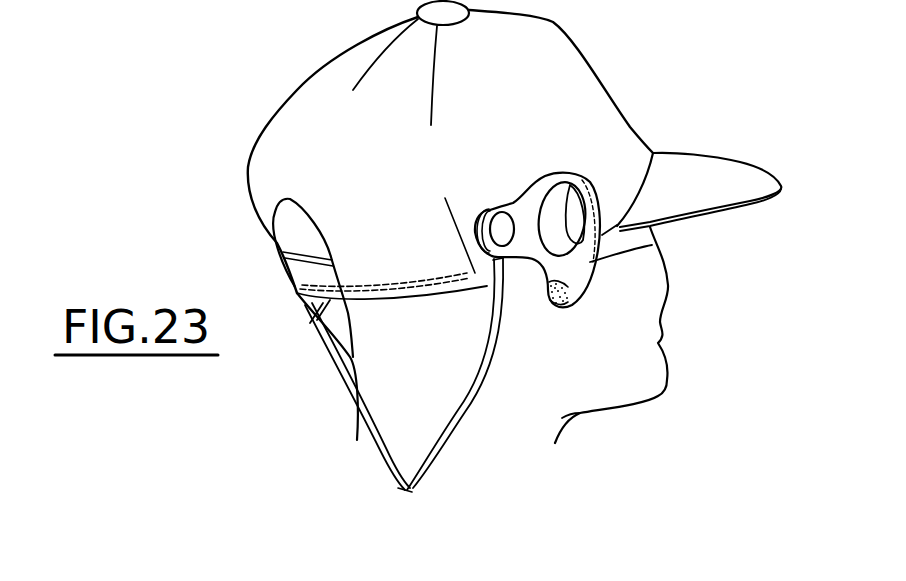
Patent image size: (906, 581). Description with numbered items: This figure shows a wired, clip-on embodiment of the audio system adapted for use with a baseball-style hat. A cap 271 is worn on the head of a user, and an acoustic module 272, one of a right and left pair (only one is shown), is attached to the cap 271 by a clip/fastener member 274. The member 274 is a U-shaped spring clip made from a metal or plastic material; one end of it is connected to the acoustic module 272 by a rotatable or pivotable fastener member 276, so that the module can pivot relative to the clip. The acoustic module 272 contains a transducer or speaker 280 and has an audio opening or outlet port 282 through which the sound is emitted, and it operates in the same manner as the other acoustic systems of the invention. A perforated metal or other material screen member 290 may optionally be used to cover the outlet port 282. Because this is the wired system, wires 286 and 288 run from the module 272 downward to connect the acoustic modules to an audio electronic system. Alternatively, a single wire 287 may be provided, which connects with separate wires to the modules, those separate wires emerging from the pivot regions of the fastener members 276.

The cap 271 is at (574, 50).
The acoustic module 272 is at (655, 246).
The clip/fastener member 274 is at (489, 282).
The rotatable or pivotable fastener member 276 is at (500, 218).
The transducer or speaker 280 is at (576, 204).
The audio opening (outlet port) 282 is at (578, 296).
The wire 286 is at (473, 373).
The single wire 287 is at (312, 307).
The wire 288 is at (333, 377).
The screen member 290 is at (547, 303).